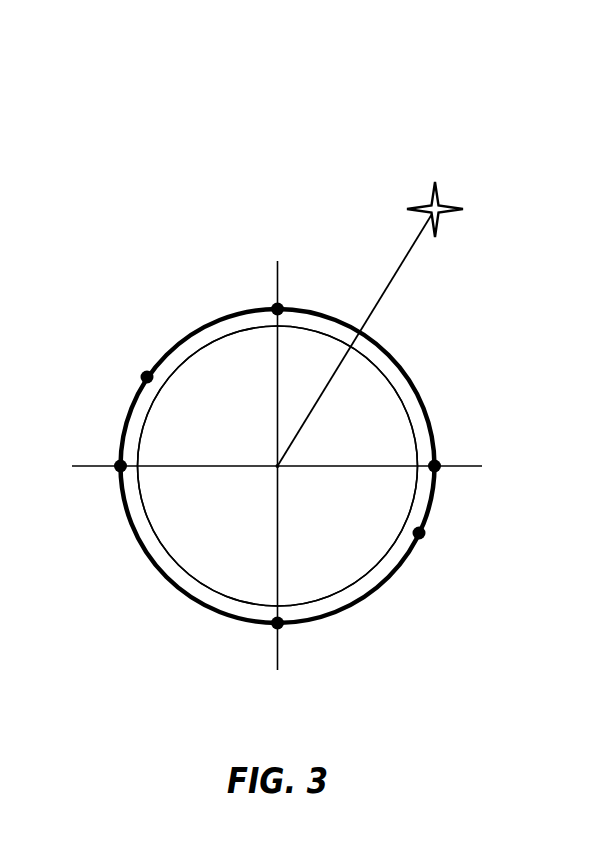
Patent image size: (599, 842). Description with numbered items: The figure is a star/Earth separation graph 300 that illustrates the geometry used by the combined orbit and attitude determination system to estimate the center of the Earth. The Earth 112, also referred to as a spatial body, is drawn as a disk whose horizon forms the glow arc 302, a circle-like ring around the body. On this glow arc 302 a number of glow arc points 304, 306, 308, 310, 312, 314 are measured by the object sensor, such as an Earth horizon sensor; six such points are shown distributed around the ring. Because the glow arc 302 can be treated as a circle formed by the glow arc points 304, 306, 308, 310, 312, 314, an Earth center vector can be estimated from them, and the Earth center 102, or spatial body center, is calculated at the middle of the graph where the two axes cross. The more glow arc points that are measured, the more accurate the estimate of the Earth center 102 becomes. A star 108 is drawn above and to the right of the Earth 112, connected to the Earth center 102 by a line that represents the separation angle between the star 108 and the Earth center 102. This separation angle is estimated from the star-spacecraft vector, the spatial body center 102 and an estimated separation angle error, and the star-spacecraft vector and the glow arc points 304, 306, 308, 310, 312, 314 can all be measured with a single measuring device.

The star/Earth separation graph 300 is at (540, 46).
The Earth center 102 is at (276, 468).
The star 108 is at (445, 206).
The Earth 112 is at (342, 539).
The glow arc 302 is at (413, 405).
The glow arc point 304 is at (271, 303).
The glow arc point 306 is at (142, 372).
The glow arc point 308 is at (114, 462).
The glow arc point 310 is at (271, 627).
The glow arc point 312 is at (425, 538).
The glow arc point 314 is at (441, 471).